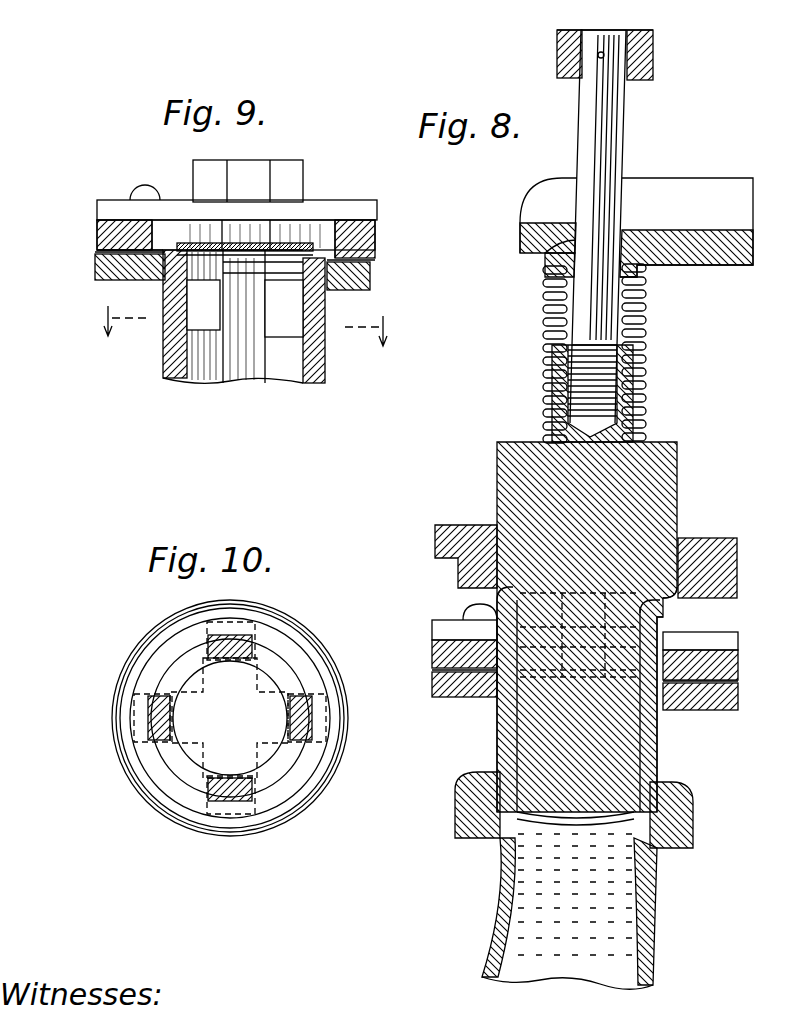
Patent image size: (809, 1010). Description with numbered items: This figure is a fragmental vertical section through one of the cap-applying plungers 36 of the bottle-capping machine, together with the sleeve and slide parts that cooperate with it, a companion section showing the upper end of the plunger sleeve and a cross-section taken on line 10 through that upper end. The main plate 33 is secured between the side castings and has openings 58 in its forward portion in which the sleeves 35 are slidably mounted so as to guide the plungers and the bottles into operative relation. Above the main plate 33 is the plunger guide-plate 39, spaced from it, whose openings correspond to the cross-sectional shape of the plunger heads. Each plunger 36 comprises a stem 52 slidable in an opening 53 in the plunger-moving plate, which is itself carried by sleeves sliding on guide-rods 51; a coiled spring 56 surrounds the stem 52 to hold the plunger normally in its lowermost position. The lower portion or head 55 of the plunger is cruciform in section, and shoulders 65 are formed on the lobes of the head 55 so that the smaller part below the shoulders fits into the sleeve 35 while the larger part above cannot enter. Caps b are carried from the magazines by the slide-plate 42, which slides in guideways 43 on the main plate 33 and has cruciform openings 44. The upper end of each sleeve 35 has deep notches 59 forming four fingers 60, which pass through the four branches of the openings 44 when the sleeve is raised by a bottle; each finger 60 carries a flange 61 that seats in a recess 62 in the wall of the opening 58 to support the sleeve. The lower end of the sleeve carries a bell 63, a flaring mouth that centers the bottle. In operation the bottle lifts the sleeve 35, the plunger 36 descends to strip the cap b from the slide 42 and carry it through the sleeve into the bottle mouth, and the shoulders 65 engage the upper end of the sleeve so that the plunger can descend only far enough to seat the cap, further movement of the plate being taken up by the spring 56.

In FIG. 8, the guide-rods 51 is at (653, 58).
In FIG. 8, the stem 52 is at (620, 140).
In FIG. 8, the opening 53 is at (548, 262).
In FIG. 8, the head 55 is at (540, 505).
In FIG. 8, the coiled springs 56 is at (643, 372).
In FIG. 8, the plunger guide-plate 39 is at (435, 548).
In FIG. 8, the shoulders 65 is at (510, 574).
In FIG. 8, the flange 61 is at (497, 598).
In FIG. 9, the flange 61 is at (157, 268).
In FIG. 8, the guideways 43 is at (445, 632).
In FIG. 9, the guideways 43 is at (166, 212).
In FIG. 8, the slide-plate 42 is at (440, 655).
In FIG. 9, the slide-plate 42 is at (105, 238).
In FIG. 8, the recess 62 is at (497, 682).
In FIG. 9, the recess 62 is at (108, 278).
In FIG. 8, the plate 33 is at (455, 697).
In FIG. 9, the plate 33 is at (163, 262).
In FIG. 8, the openings 58 is at (460, 702).
In FIG. 8, the sleeves 35 is at (497, 730).
In FIG. 10, the sleeves 35 is at (270, 675).
In FIG. 8, the fingers 60 is at (670, 616).
In FIG. 9, the fingers 60 is at (172, 302).
In FIG. 10, the fingers 60 is at (165, 760).
In FIG. 8, the bells 63 is at (465, 812).
In FIG. 10, the bells 63 is at (120, 758).
In FIG. 8, the caps b is at (610, 862).
In FIG. 9, the caps b is at (262, 243).
In FIG. 9, the cap-applying plungers 36 is at (258, 163).
In FIG. 9, the openings 44 is at (293, 238).
In FIG. 9, the section line 10 is at (251, 324).
In FIG. 9, the notches 59 is at (283, 338).
In FIG. 10, the notches 59 is at (185, 770).